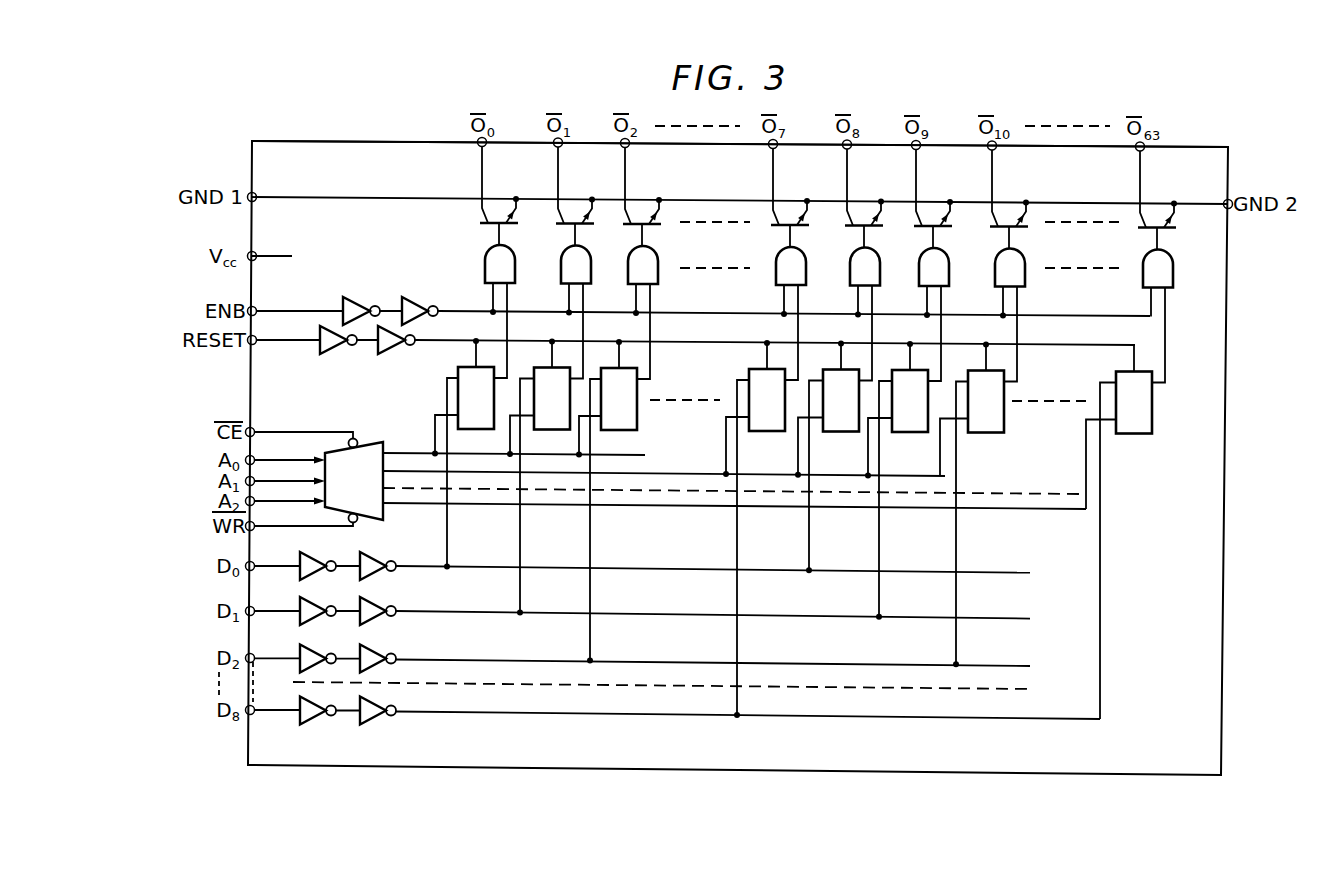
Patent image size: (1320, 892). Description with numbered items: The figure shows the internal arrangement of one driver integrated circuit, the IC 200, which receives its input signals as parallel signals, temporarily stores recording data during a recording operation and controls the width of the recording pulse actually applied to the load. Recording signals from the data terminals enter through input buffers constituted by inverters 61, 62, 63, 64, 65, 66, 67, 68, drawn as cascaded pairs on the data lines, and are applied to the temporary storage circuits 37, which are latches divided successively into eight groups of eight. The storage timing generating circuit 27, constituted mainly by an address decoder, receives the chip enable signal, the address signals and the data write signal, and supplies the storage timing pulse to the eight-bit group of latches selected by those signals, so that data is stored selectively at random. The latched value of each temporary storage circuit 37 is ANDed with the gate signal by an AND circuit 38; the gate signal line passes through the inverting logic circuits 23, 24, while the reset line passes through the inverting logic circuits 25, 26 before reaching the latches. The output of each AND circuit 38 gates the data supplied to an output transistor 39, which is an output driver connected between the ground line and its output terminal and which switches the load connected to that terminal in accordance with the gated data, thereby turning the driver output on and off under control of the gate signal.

The inverting logic circuit 23 is at (362, 299).
The inverting logic circuit 24 is at (421, 299).
The inverting logic circuit 25 is at (338, 352).
The inverting logic circuit 26 is at (396, 352).
The storage timing generating circuit 27 is at (363, 445).
The temporary storage circuit 37 is at (467, 452).
The AND circuit 38 is at (517, 311).
The output transistor 39 is at (512, 202).
The inverter 61 is at (318, 556).
The inverter 62 is at (378, 556).
The inverter 63 is at (318, 601).
The inverter 64 is at (378, 601).
The inverter 65 is at (318, 648).
The inverter 66 is at (378, 648).
The inverter 67 is at (318, 722).
The inverter 68 is at (378, 722).
The IC 200 is at (828, 771).